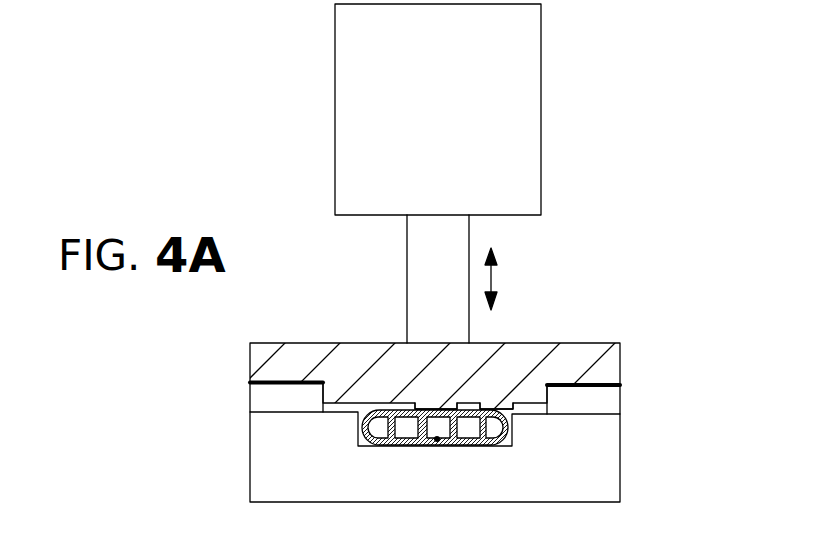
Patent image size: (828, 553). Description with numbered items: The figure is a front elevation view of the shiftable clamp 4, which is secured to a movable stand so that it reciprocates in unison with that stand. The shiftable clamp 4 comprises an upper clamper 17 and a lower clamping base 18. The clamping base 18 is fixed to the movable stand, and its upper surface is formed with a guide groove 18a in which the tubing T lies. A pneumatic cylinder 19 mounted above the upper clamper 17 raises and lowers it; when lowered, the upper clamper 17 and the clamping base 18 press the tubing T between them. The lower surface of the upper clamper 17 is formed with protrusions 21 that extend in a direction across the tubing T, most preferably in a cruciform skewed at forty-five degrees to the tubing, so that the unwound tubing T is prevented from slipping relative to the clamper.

The shiftable clamp 4 is at (454, 278).
The pneumatic cylinder 19 is at (518, 120).
The upper clamper 17 is at (552, 358).
The protrusions 21 is at (467, 406).
The clamping base 18 is at (577, 482).
The guide groove 18a is at (440, 448).
The tubing T is at (367, 448).